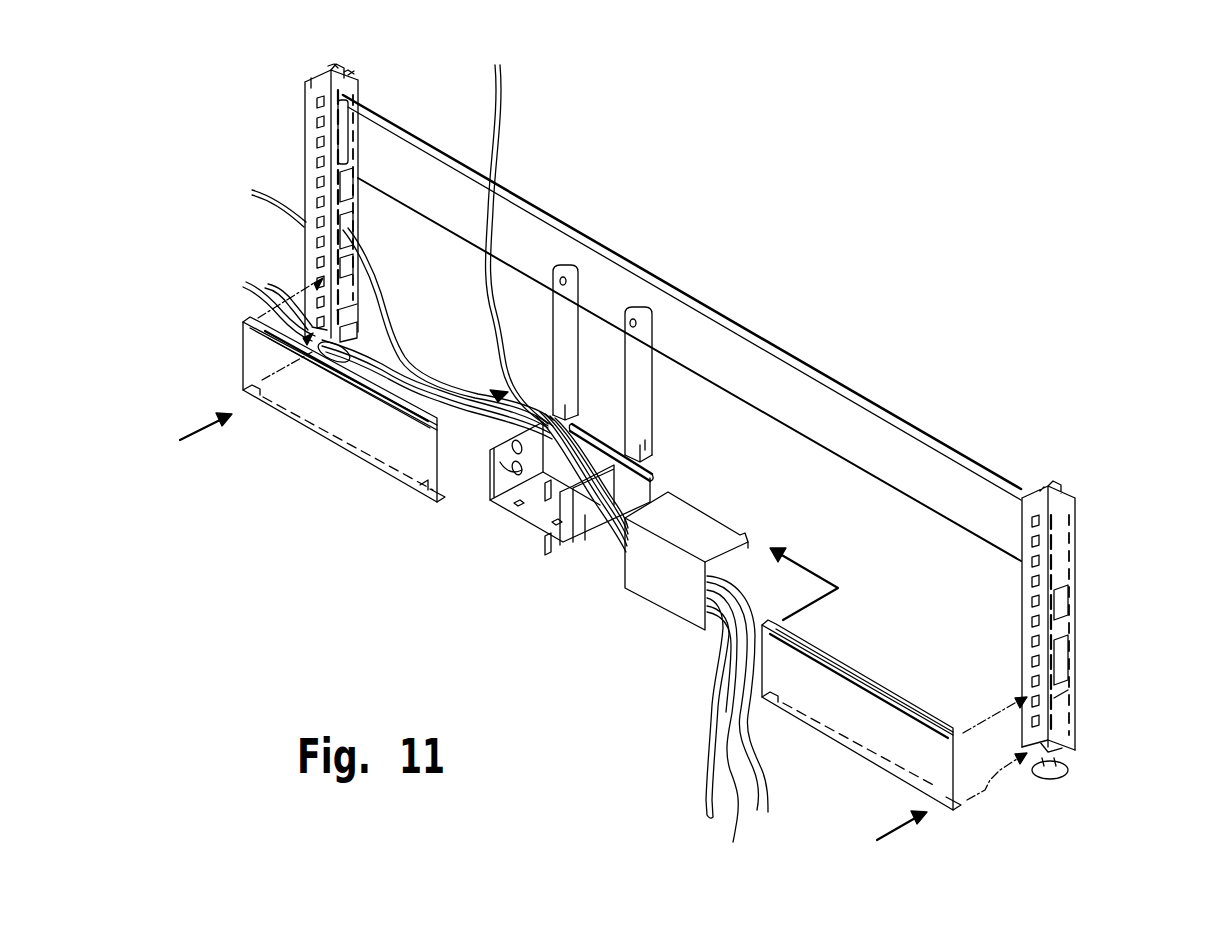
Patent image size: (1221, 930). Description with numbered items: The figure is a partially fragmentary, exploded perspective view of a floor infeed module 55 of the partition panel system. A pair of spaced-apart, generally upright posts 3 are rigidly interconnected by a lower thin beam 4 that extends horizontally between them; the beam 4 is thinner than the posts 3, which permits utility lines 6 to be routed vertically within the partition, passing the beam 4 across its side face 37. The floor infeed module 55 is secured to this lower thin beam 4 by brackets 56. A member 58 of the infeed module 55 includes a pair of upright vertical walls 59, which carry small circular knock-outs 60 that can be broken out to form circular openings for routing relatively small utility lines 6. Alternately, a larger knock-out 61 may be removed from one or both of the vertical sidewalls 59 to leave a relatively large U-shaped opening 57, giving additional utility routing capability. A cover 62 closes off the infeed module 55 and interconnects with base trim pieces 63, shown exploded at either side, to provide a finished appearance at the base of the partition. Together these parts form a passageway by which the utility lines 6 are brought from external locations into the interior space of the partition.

The upright posts 3 is at (306, 118).
The beam 4 is at (772, 343).
The utility lines 6 is at (711, 697).
The side face 37 is at (846, 442).
The floor infeed module 55 is at (517, 547).
The brackets 56 is at (654, 400).
The U-shaped opening 57 is at (583, 515).
The member 58 is at (518, 512).
The vertical walls 59 is at (490, 477).
The circular knock-outs 60 is at (512, 480).
The larger knock-out 61 is at (513, 466).
The cover 62 is at (648, 577).
The base trim pieces 63 is at (357, 425).